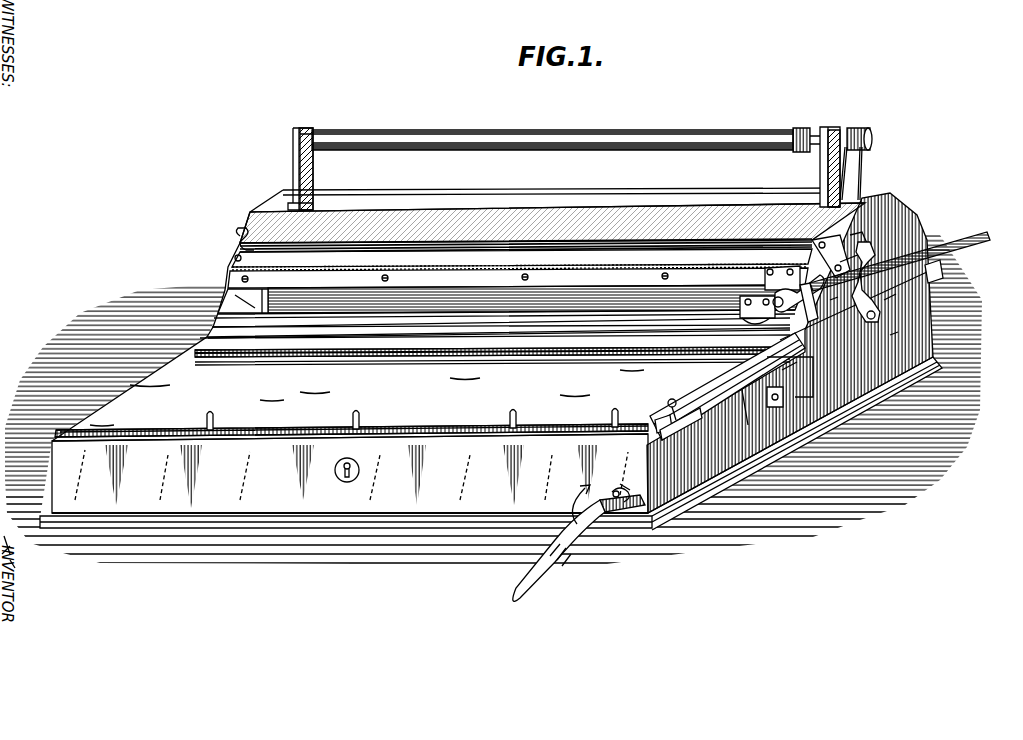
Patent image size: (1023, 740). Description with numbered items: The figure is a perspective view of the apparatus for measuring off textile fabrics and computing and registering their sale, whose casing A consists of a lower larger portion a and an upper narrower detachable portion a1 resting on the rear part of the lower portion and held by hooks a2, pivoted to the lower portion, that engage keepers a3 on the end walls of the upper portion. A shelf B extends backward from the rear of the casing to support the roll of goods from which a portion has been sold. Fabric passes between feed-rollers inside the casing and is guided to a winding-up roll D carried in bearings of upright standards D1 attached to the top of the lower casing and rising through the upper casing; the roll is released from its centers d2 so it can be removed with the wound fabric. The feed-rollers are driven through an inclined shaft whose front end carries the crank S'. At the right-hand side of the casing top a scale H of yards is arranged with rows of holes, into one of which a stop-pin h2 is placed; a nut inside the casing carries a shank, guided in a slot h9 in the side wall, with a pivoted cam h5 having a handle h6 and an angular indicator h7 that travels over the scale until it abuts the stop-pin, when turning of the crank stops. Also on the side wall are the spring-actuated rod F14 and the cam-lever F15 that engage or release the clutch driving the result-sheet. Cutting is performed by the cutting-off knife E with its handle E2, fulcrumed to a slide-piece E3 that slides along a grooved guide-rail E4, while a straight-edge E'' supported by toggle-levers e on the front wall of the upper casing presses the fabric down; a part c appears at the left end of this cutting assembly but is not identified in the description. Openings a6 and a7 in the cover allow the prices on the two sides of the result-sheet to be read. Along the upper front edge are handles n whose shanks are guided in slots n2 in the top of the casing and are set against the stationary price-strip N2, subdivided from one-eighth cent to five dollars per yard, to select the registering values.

The casing A is at (491, 361).
The upper narrower detachable portion of casing a1 is at (249, 219).
The hooks a2 is at (895, 300).
The keepers a3 is at (876, 273).
The opening a6 is at (432, 372).
The second opening a7 is at (470, 350).
The lower larger portion of casing a is at (598, 414).
The shelf B is at (962, 236).
The end cap c is at (234, 299).
The winding-up roll D is at (582, 130).
The upright standards D1 is at (294, 167).
The centers d2 is at (842, 128).
The cutting-off knife E is at (508, 313).
The straight-edge E'' is at (482, 335).
The handle E2 is at (850, 248).
The slide-piece E3 is at (776, 270).
The guide-rail E4 is at (566, 280).
The toggle-levers e is at (838, 288).
The scale of yards H is at (730, 384).
The stop-pin h2 is at (665, 402).
The cam h5 is at (678, 440).
The handle h6 is at (640, 458).
The angular indicator h7 is at (662, 418).
The slot h9 is at (765, 400).
The spring-actuated rod F14 is at (795, 398).
The cam-lever F15 is at (800, 372).
The handle n is at (404, 410).
The slot n2 is at (351, 424).
The stationary price-strip N2 is at (180, 445).
The crank S' is at (579, 543).